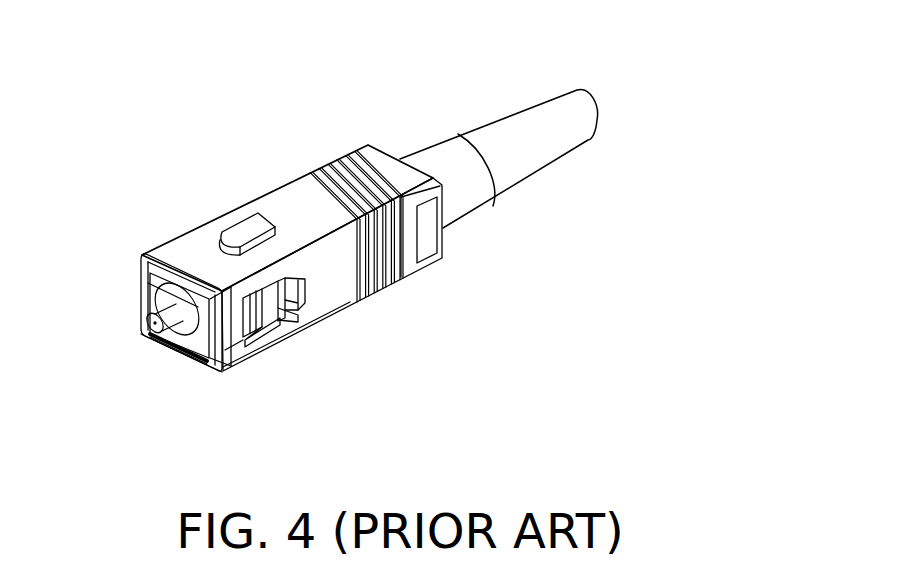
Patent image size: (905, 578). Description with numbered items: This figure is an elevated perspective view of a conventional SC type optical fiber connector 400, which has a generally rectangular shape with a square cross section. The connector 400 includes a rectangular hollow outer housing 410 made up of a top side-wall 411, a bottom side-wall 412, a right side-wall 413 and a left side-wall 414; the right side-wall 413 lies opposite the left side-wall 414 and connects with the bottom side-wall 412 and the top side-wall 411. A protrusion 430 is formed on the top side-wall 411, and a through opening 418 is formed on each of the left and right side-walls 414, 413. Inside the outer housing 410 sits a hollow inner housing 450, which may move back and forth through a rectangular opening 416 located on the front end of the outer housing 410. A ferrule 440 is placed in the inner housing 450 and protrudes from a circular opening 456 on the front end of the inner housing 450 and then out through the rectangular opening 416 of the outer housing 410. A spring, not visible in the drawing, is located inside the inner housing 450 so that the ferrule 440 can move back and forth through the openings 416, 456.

The SC type optical fiber connector 400 is at (127, 128).
The outer housing 410 is at (364, 105).
The top side-wall 411 is at (190, 253).
The bottom side-wall 412 is at (182, 357).
The right side-wall 413 is at (138, 275).
The left side-wall 414 is at (325, 287).
The rectangular opening 416 is at (152, 285).
The through opening 418 is at (268, 307).
The protrusion 430 is at (248, 227).
The ferrule 440 is at (157, 338).
The inner housing 450 is at (195, 358).
The circular opening 456 is at (145, 305).